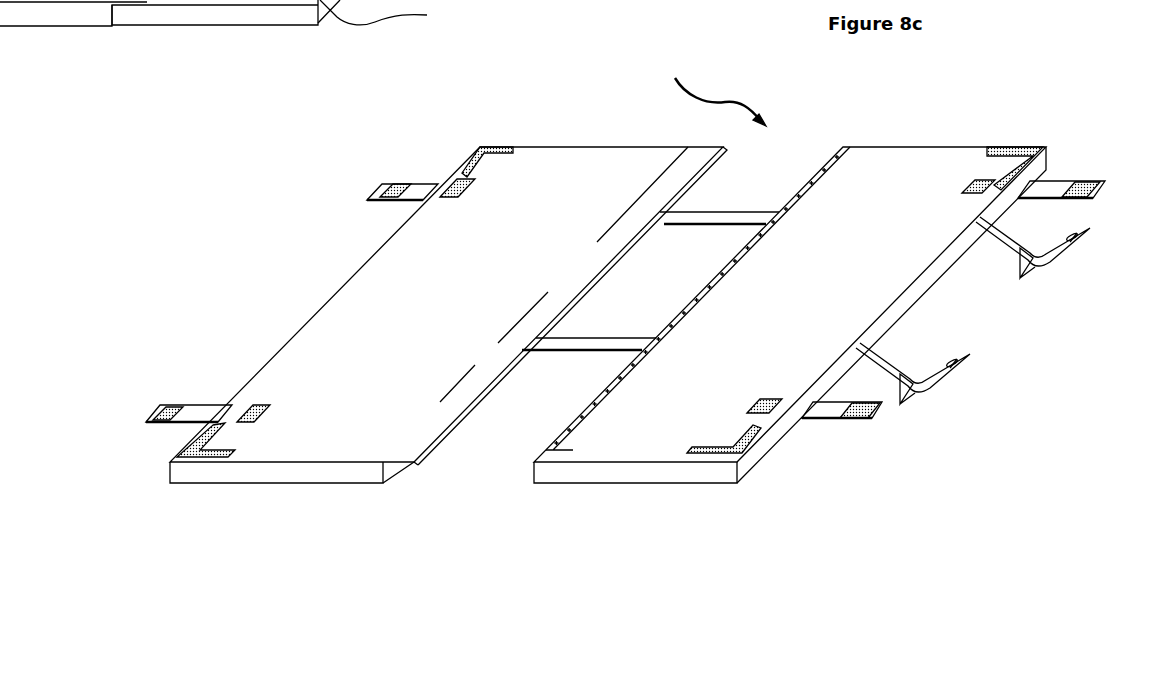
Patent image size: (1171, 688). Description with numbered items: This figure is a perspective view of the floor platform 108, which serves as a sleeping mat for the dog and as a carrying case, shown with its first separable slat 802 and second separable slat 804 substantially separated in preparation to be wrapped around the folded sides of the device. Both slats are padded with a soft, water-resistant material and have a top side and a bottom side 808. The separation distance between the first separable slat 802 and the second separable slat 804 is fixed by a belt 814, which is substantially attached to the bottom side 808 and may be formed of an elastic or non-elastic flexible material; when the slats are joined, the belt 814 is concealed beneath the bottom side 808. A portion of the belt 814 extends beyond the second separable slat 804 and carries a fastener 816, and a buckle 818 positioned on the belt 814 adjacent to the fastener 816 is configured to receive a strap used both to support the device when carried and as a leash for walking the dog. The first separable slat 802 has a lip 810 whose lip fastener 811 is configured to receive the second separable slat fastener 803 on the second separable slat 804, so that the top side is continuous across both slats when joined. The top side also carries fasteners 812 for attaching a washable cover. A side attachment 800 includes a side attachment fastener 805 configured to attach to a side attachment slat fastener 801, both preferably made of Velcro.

The floor platform 108 is at (708, 89).
The side attachment 800 is at (412, 188).
The side attachment slat fastener 801 is at (450, 184).
The first separable slat 802 is at (55, 24).
The second separable slat fastener 803 is at (846, 150).
The second separable slat 804 is at (260, 24).
The side attachment fastener 805 is at (392, 194).
The bottom side 808 is at (350, 485).
The lip 810 is at (418, 466).
The lip fastener 811 is at (473, 413).
The fasteners 812 is at (1113, 118).
The belt 814 is at (703, 218).
The fastener 816 is at (1087, 232).
The buckle 818 is at (1020, 265).